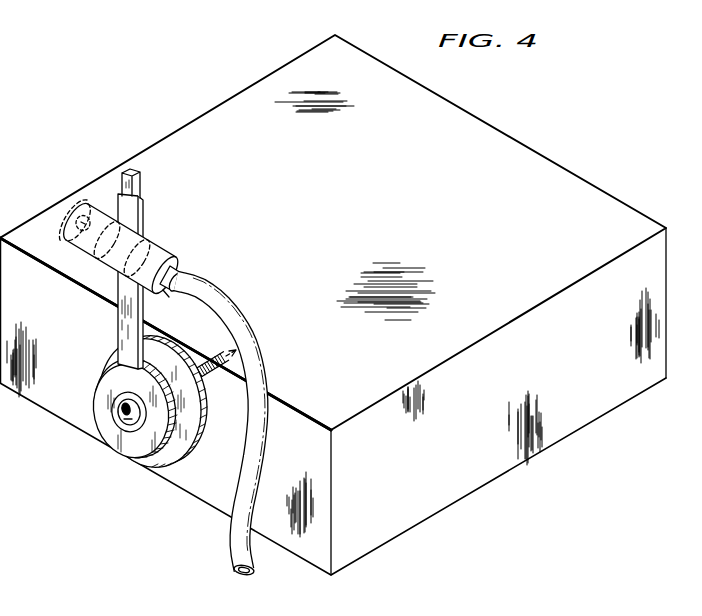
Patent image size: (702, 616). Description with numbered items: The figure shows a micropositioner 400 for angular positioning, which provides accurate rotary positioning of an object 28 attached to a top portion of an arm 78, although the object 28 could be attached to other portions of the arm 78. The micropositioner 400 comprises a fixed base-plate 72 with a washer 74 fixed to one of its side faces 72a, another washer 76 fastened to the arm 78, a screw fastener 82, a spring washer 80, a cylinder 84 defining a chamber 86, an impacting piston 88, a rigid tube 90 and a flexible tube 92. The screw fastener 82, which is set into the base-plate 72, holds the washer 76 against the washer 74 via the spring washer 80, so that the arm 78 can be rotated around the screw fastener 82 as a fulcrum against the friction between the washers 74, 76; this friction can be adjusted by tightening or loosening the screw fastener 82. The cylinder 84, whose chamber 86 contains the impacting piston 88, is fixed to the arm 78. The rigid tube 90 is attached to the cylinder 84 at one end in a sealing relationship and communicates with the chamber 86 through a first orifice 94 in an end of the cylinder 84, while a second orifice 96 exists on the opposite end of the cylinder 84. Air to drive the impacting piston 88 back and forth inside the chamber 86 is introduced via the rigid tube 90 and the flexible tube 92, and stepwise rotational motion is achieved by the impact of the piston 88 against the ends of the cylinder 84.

The micropositioner 400 is at (172, 30).
The fixed base-plate 72 is at (413, 513).
The side face 72a is at (210, 483).
The washer 74 is at (134, 410).
The washer 76 is at (141, 448).
The arm 78 is at (141, 210).
The spring washer 80 is at (113, 405).
The screw fastener 82 is at (207, 384).
The cylinder 84 is at (119, 226).
The chamber 86 is at (77, 203).
The impacting piston 88 is at (66, 231).
The rigid tube 90 is at (181, 268).
The flexible tube 92 is at (236, 313).
The first orifice 94 is at (167, 296).
The second orifice 96 is at (63, 197).
The object 28 is at (129, 169).